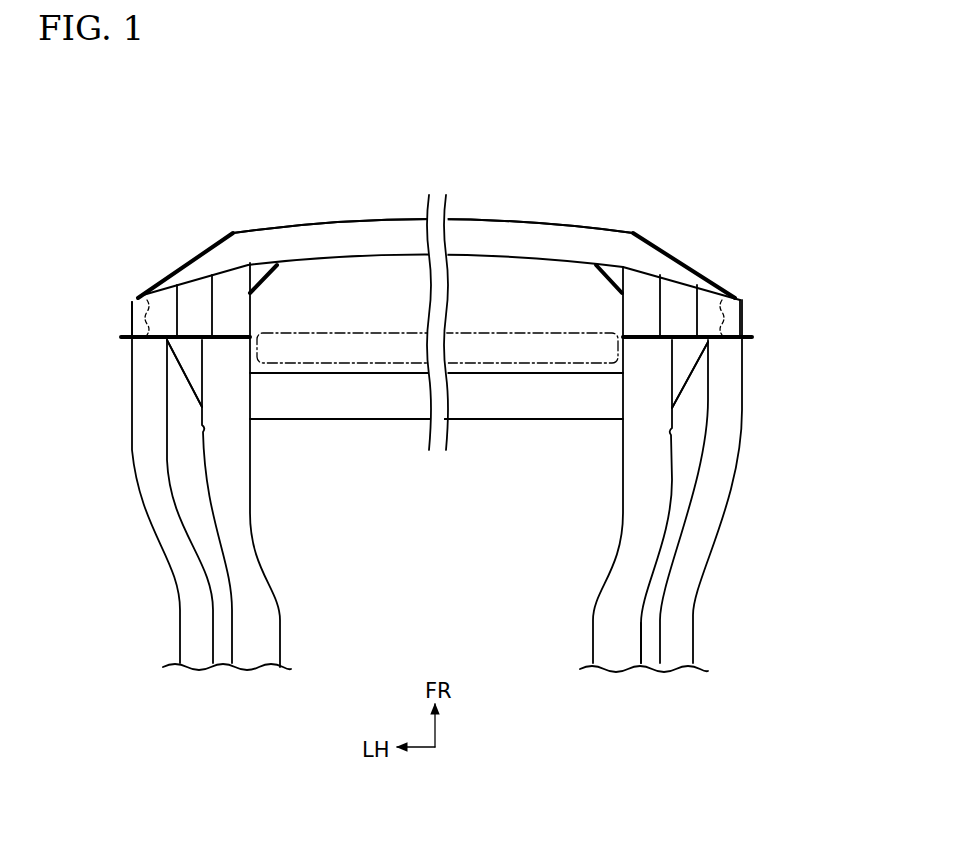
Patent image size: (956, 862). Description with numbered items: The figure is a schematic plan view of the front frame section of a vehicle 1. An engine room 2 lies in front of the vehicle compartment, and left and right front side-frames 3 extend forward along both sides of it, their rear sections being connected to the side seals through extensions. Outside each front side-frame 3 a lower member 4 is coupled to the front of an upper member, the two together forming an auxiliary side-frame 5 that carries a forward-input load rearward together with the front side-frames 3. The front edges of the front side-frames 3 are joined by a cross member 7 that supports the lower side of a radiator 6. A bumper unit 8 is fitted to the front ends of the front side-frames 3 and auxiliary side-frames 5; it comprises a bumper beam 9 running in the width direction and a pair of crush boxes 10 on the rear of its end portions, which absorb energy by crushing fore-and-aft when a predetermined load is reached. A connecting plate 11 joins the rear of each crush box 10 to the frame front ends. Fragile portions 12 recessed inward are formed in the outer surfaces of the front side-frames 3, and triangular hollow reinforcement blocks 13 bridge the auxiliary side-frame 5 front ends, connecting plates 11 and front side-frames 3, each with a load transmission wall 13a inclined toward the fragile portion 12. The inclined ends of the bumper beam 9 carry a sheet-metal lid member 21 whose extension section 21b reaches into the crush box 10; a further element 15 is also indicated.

The vehicle 1 is at (441, 199).
The engine room 2 is at (507, 607).
The front side-frame 3 is at (632, 595).
The lower member 4 is at (429, 467).
The auxiliary side-frame 5 is at (760, 526).
The radiator 6 is at (525, 380).
The cross member 7 is at (357, 400).
The bumper unit 8 is at (574, 221).
The bumper beam 9 is at (513, 218).
The crush box 10 is at (136, 300).
The connecting plate 11 is at (127, 338).
The fragile portion 12 is at (203, 430).
The reinforcement block 13 is at (178, 353).
The load transmission wall 13a is at (183, 377).
The gusset 15 is at (270, 276).
The lid member 21 is at (203, 251).
The extension section 21b is at (147, 300).